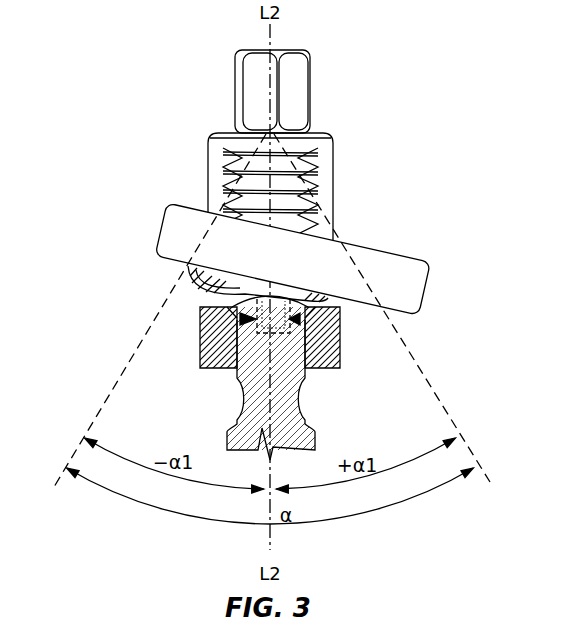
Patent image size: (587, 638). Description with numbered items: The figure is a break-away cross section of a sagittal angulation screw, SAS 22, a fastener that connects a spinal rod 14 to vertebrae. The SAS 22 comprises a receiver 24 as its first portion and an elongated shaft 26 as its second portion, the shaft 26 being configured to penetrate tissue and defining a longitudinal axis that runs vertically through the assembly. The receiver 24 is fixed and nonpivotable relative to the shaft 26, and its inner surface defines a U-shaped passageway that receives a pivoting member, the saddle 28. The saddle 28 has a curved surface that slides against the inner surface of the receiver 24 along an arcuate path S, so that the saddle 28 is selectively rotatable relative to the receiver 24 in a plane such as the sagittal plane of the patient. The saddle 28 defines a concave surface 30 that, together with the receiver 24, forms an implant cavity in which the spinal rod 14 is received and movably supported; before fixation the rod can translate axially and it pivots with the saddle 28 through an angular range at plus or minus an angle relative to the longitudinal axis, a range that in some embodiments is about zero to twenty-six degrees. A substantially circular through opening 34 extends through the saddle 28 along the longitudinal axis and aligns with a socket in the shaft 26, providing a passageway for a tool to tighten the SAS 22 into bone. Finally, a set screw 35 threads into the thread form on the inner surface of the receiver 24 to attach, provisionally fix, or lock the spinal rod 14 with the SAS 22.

The spinal rod 14 is at (373, 267).
The sagittal angulation screw (SAS) 22 is at (160, 178).
The receiver 24 is at (335, 168).
The elongated shaft 26 is at (303, 435).
The saddle 28 is at (160, 275).
The concave surface 30 is at (202, 335).
The through opening 34 is at (245, 285).
The set screw 35 is at (303, 90).
The arcuate path S is at (256, 334).